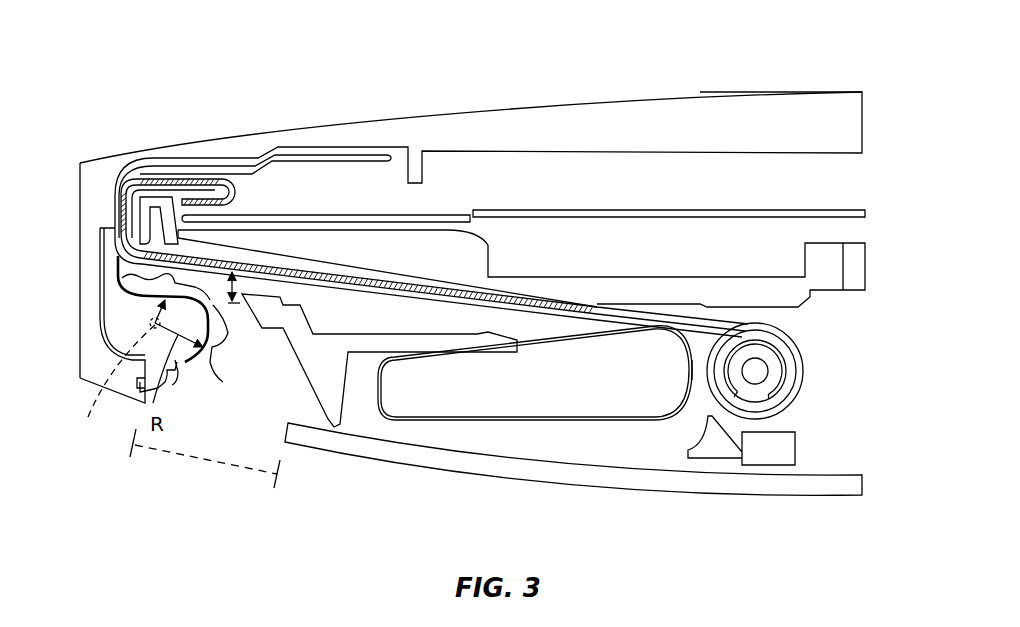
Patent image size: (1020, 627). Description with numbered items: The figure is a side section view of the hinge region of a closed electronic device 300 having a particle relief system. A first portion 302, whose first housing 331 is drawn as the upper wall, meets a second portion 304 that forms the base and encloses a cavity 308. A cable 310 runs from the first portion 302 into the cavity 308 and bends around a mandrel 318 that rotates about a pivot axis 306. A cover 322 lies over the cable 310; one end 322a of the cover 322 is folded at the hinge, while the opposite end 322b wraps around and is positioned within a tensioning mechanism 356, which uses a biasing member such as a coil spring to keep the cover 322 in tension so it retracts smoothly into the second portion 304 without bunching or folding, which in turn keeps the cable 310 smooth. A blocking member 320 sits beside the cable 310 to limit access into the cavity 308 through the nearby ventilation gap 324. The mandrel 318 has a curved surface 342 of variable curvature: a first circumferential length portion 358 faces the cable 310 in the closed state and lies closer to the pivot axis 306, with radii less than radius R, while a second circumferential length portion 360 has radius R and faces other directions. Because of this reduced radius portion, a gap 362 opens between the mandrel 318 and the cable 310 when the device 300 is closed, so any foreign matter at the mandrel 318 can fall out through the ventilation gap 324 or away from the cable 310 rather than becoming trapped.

The electronic device 300 is at (158, 86).
The first portion 302 is at (745, 92).
The second portion 304 is at (752, 496).
The pivot axis 306 is at (102, 379).
The cavity 308 is at (633, 356).
The cable 310 is at (684, 349).
The mandrel 318 is at (178, 378).
The blocking member 320 is at (338, 361).
The cover 322 is at (290, 270).
The end of the cover 322a is at (230, 194).
The end of the cover 322b is at (593, 305).
The ventilation gap 324 is at (205, 462).
The first housing 331 is at (733, 134).
The curved surface 342 is at (223, 382).
The tensioning mechanism 356 is at (810, 366).
The first circumferential length portion 358 is at (118, 268).
The second circumferential length portion 360 is at (208, 380).
The gap 362 is at (236, 273).